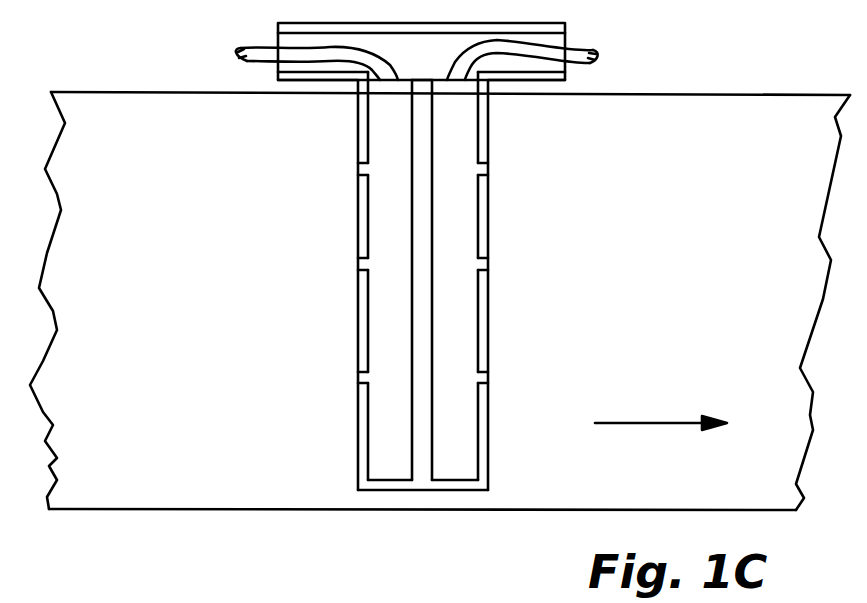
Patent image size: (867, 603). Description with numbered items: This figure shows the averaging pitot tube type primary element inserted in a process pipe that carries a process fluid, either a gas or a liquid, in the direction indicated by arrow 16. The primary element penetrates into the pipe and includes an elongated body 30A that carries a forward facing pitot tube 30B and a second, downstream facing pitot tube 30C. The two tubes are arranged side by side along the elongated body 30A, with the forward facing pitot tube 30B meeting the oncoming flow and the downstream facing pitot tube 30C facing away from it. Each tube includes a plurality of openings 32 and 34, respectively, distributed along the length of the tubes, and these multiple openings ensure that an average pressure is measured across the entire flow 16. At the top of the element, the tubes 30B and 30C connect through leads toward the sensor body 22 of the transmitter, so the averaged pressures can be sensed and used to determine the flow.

The arrow 16 is at (648, 424).
The sensor body 22 is at (232, 52).
The elongated body 30A is at (366, 448).
The forward facing pitot tube 30B is at (378, 125).
The downstream facing pitot tube 30C is at (455, 115).
The openings 32 is at (376, 377).
The openings 34 is at (478, 377).